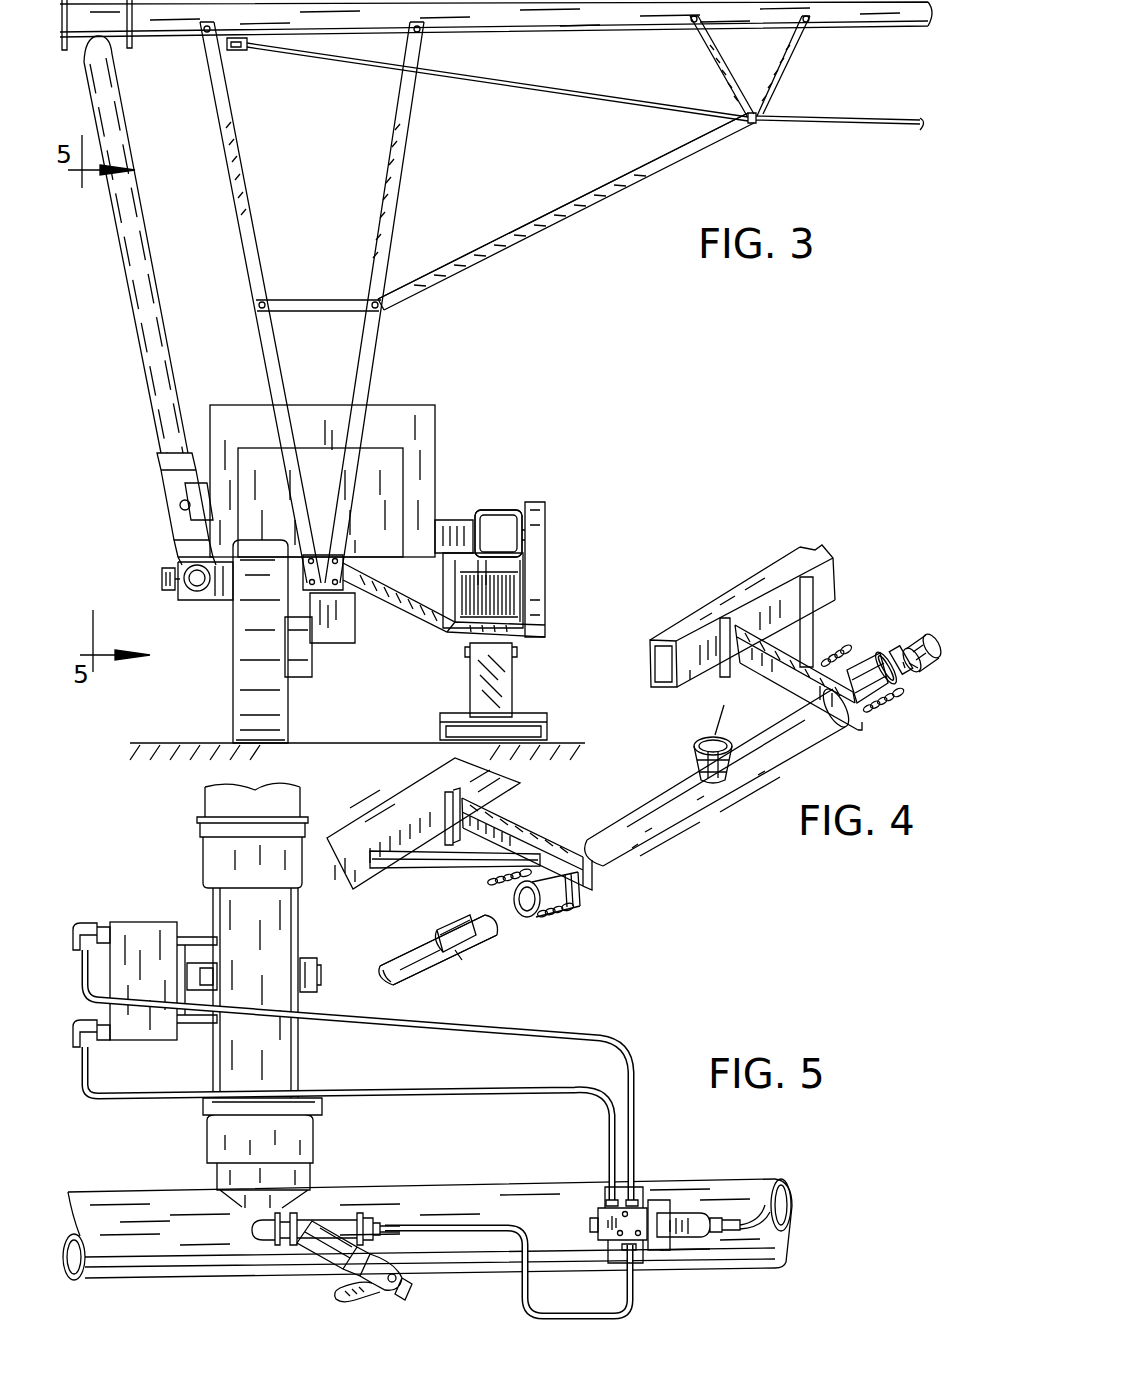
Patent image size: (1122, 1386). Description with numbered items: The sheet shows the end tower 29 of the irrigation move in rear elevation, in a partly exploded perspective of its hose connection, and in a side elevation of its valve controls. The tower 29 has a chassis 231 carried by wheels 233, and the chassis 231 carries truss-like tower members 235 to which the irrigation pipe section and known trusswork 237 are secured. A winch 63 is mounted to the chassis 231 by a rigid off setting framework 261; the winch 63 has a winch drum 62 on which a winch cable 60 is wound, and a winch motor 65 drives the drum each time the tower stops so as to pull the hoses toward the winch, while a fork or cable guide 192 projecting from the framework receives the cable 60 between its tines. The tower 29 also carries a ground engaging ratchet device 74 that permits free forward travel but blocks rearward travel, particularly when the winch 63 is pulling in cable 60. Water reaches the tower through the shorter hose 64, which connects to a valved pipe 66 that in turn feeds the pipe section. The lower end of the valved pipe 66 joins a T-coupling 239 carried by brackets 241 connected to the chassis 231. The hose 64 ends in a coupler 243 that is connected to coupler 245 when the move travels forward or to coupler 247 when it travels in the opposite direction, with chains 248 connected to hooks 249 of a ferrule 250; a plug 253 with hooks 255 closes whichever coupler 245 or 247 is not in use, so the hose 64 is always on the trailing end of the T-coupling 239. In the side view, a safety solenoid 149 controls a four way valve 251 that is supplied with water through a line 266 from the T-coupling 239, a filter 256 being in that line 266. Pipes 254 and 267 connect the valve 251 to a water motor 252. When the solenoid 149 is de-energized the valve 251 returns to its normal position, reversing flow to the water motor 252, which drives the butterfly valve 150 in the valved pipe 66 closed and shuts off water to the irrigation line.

In FIG. 3, the tower 29 is at (600, 234).
In FIG. 3, the winch cable 60 is at (525, 575).
In FIG. 3, the winch drum 62 is at (525, 598).
In FIG. 3, the winch 63 is at (506, 485).
In FIG. 4, the shorter hose 64 is at (425, 983).
In FIG. 3, the winch motor 65 is at (510, 518).
In FIG. 3, the valved pipe 66 is at (115, 381).
In FIG. 5, the valved pipe 66 is at (175, 847).
In FIG. 3, the ground engaging ratchet device 74 is at (535, 672).
In FIG. 3, the safety solenoid 149 is at (165, 580).
In FIG. 5, the safety solenoid 149 is at (663, 1248).
In FIG. 3, the butterfly valve 150 is at (180, 512).
In FIG. 5, the butterfly valve 150 is at (312, 962).
In FIG. 3, the fork or cable guide 192 is at (483, 583).
In FIG. 3, the chassis 231 is at (337, 632).
In FIG. 4, the chassis 231 is at (755, 585).
In FIG. 3, the wheels 233 is at (245, 651).
In FIG. 3, the truss-like tower members 235 is at (400, 148).
In FIG. 3, the trusswork 237 is at (683, 152).
In FIG. 3, the T-coupling 239 is at (190, 570).
In FIG. 4, the T-coupling 239 is at (665, 840).
In FIG. 5, the T-coupling 239 is at (702, 1182).
In FIG. 3, the brackets 241 is at (220, 598).
In FIG. 4, the brackets 241 is at (765, 665).
In FIG. 4, the coupler 243 is at (485, 968).
In FIG. 4, the coupler 245 is at (560, 912).
In FIG. 4, the coupler 247 is at (868, 665).
In FIG. 4, the chains 248 is at (838, 648).
In FIG. 4, the hooks 249 is at (445, 935).
In FIG. 4, the ferrule 250 is at (450, 948).
In FIG. 5, the four way valve 251 is at (608, 1222).
In FIG. 3, the water motor 252 is at (160, 498).
In FIG. 5, the water motor 252 is at (132, 925).
In FIG. 4, the plug 253 is at (918, 640).
In FIG. 5, the pipe 254 is at (478, 1035).
In FIG. 4, the hooks 255 is at (905, 670).
In FIG. 5, the filter 256 is at (328, 1238).
In FIG. 3, the rigid off setting framework 261 is at (412, 613).
In FIG. 5, the line 266 is at (438, 1225).
In FIG. 5, the pipe 267 is at (357, 1093).